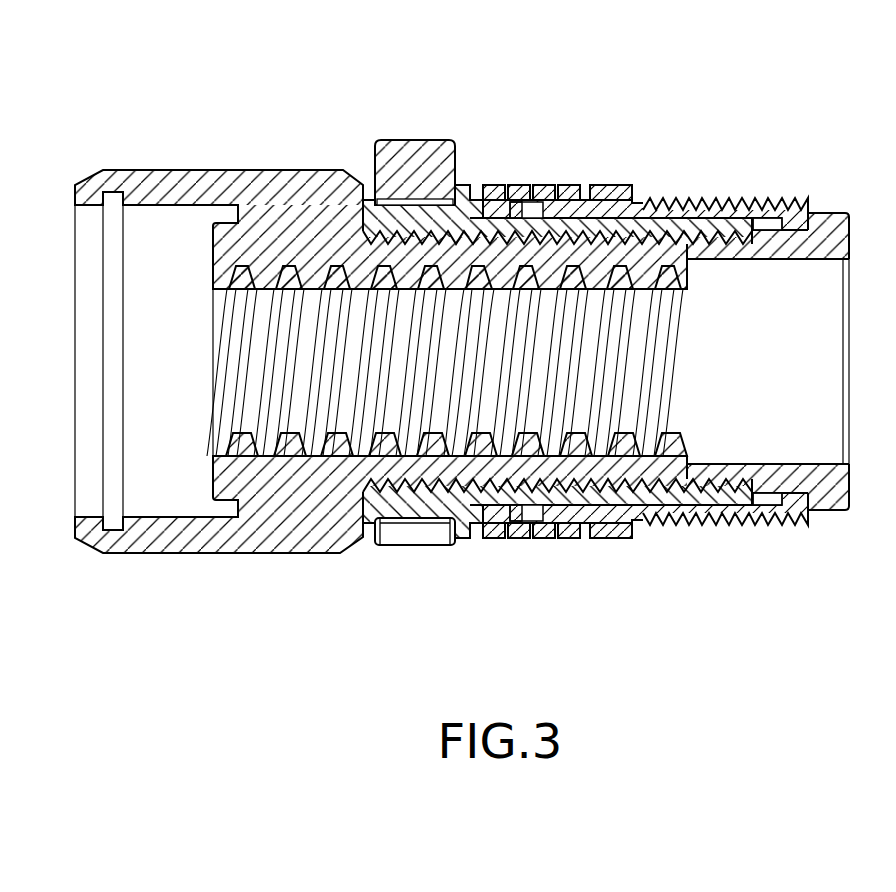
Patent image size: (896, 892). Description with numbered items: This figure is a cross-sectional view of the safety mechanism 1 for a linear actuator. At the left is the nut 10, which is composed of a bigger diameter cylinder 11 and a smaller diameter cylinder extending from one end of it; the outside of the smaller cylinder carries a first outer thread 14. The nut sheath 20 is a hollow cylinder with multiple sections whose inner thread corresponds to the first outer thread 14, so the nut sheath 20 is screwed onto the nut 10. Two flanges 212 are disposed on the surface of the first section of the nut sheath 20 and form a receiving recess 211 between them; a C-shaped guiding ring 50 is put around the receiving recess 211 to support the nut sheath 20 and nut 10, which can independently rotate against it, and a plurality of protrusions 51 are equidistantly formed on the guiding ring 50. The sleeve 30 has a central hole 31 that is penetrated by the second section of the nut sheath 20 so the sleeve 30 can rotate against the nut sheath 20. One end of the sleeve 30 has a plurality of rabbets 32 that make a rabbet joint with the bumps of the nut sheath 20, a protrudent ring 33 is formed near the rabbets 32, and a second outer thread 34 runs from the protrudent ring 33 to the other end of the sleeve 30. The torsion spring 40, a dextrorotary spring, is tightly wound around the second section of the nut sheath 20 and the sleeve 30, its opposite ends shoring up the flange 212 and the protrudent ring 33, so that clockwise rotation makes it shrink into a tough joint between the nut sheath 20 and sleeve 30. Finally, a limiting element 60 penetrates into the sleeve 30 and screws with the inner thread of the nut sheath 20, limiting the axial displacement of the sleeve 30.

The safety mechanism 1 is at (708, 52).
The nut 10 is at (224, 165).
The bigger diameter cylinder 11 is at (170, 182).
The flanges 212 is at (345, 205).
The receiving recess 211 is at (363, 190).
The protrusions 51 is at (400, 150).
The guiding ring 50 is at (426, 132).
The nut sheath 20 is at (470, 178).
The rabbets 32 is at (522, 206).
The torsion spring 40 is at (545, 178).
The protrudent ring 33 is at (607, 185).
The sleeve 30 is at (625, 178).
The first outer thread 14 is at (660, 215).
The second outer thread 34 is at (733, 205).
The central hole 31 is at (766, 222).
The limiting element 60 is at (847, 205).